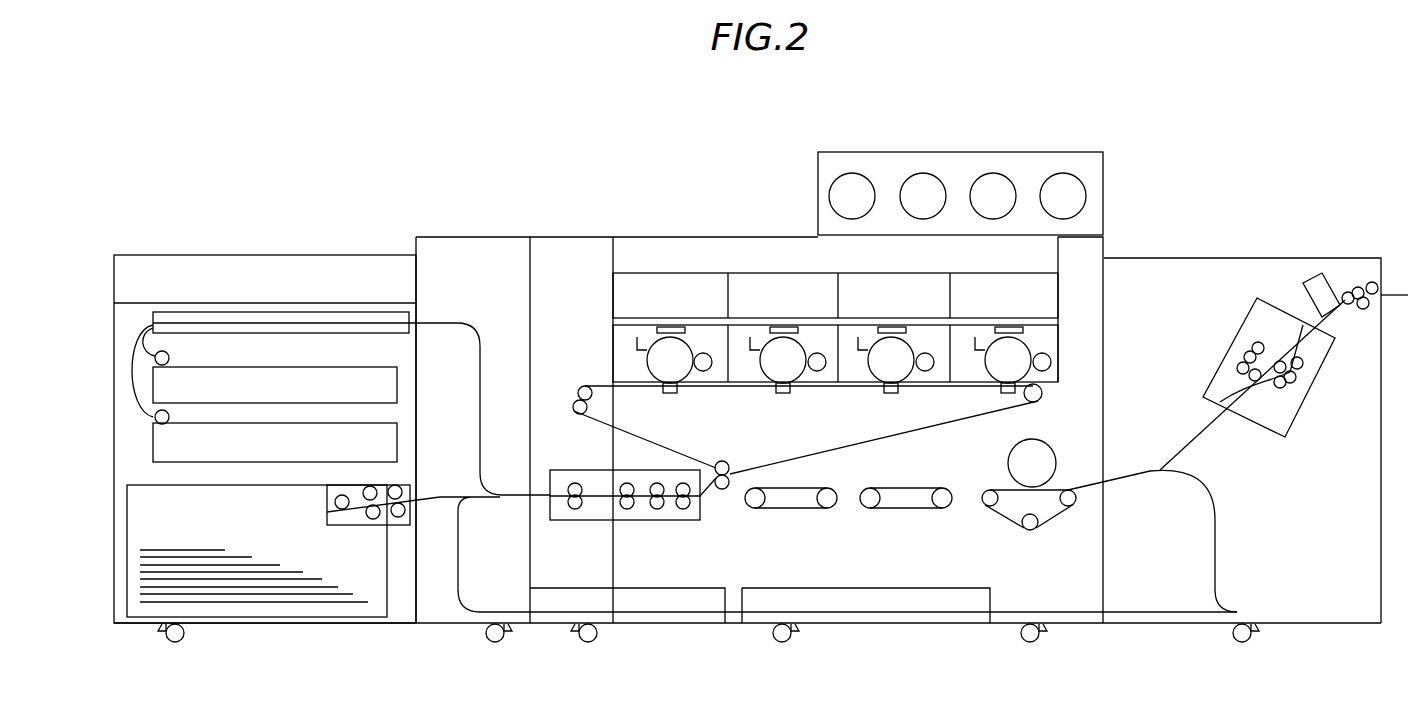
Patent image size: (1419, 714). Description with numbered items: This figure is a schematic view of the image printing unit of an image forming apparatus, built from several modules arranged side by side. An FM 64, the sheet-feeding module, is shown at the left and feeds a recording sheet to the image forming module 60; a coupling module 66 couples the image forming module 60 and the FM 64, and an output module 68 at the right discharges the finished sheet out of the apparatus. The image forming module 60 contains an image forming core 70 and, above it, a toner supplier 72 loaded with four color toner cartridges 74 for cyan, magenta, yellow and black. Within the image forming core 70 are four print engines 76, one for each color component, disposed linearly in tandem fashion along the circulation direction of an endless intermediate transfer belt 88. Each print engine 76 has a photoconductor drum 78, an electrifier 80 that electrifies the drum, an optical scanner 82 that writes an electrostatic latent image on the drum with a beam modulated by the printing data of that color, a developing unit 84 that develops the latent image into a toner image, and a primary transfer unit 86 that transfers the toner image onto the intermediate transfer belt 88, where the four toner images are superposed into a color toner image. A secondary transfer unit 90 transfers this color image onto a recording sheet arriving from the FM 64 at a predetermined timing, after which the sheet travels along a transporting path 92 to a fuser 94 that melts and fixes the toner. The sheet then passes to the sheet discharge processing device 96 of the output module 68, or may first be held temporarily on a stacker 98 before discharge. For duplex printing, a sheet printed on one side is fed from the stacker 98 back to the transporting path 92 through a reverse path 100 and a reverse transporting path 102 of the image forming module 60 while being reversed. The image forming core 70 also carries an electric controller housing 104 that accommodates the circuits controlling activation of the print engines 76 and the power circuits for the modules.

The image forming module 60 is at (586, 222).
The FM (sheet-feeding module) 64 is at (267, 238).
The coupling module 66 is at (476, 222).
The output module 68 is at (1228, 228).
The image forming core 70 is at (770, 222).
The toner supplier 72 is at (983, 152).
The toner cartridge 74 is at (860, 174).
The print engine 76 is at (705, 397).
The photoconductor drum 78 is at (1033, 347).
The electrifier 80 is at (1024, 330).
The optical scanner 82 is at (1052, 297).
The developing unit 84 is at (1052, 364).
The primary transfer unit 86 is at (1022, 410).
The intermediate transfer belt 88 is at (650, 450).
The secondary transfer unit 90 is at (723, 503).
The transporting path 92 is at (849, 505).
The fuser 94 is at (1057, 464).
The sheet discharge processing device 96 is at (1232, 338).
The stacker 98 is at (1295, 578).
The reverse path 100 is at (1162, 600).
The reverse transporting path 102 is at (1035, 600).
The electric controller housing 104 is at (711, 250).